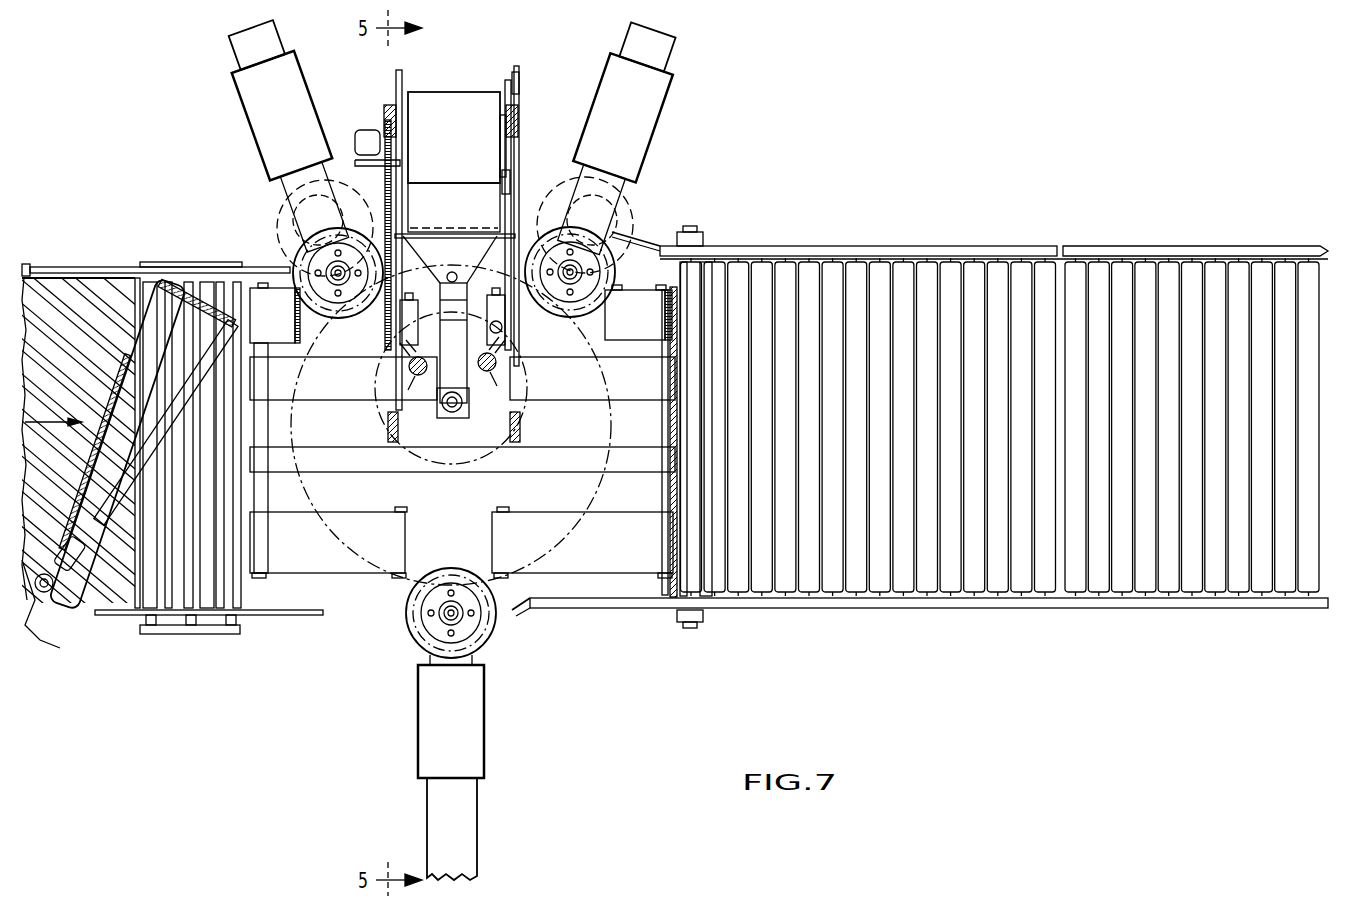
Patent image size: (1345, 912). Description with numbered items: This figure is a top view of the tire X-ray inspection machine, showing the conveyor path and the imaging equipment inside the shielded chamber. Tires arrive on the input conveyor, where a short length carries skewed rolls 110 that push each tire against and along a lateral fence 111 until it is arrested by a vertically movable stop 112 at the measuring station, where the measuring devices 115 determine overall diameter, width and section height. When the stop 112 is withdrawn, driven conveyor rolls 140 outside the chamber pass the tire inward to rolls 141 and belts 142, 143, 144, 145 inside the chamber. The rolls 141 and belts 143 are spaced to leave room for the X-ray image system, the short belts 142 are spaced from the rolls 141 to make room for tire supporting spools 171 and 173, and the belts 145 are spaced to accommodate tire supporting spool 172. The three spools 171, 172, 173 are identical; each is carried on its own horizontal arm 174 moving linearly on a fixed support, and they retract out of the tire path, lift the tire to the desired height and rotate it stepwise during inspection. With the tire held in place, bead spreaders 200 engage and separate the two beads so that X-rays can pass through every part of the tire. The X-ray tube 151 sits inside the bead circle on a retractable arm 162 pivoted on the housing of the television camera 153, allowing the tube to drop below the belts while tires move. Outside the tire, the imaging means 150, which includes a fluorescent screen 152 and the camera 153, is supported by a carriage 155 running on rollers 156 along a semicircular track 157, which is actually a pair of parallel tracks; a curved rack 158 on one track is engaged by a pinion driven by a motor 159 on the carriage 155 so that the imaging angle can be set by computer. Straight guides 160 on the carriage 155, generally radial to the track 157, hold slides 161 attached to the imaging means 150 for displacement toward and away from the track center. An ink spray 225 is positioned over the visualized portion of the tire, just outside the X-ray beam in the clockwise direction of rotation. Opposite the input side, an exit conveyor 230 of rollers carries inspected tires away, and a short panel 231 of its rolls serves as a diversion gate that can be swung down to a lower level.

The skewed rolls 110 is at (60, 297).
The lateral fence 111 is at (112, 268).
The vertically movable stop 112 is at (188, 545).
The measuring devices 115 is at (83, 628).
The driven conveyor rolls 140 is at (178, 598).
The rolls 141 is at (408, 322).
The short belts 142 is at (275, 298).
The belts 143 is at (312, 378).
The belts 144 is at (312, 463).
The belts 145 is at (315, 558).
The imaging means 150 is at (470, 85).
The X-ray tube 151 is at (451, 445).
The fluorescent screen 152 is at (455, 230).
The television camera 153 is at (467, 152).
The carriage 155 is at (506, 152).
The rollers 156 is at (520, 80).
The semicircular track 157 is at (516, 116).
The curved rack 158 is at (390, 108).
The motor 159 is at (362, 138).
The straight guides 160 is at (507, 184).
The slides 161 is at (500, 242).
The retractable arm 162 is at (466, 405).
The tire supporting spool 171 is at (322, 248).
The tire supporting spool 172 is at (590, 245).
The tire supporting spool 173 is at (470, 622).
The horizontal arm 174 is at (305, 190).
The bead spreaders 200 is at (500, 369).
The ink spray 225 is at (504, 328).
The exit conveyor 230 is at (1187, 580).
The short panel 231 is at (948, 580).